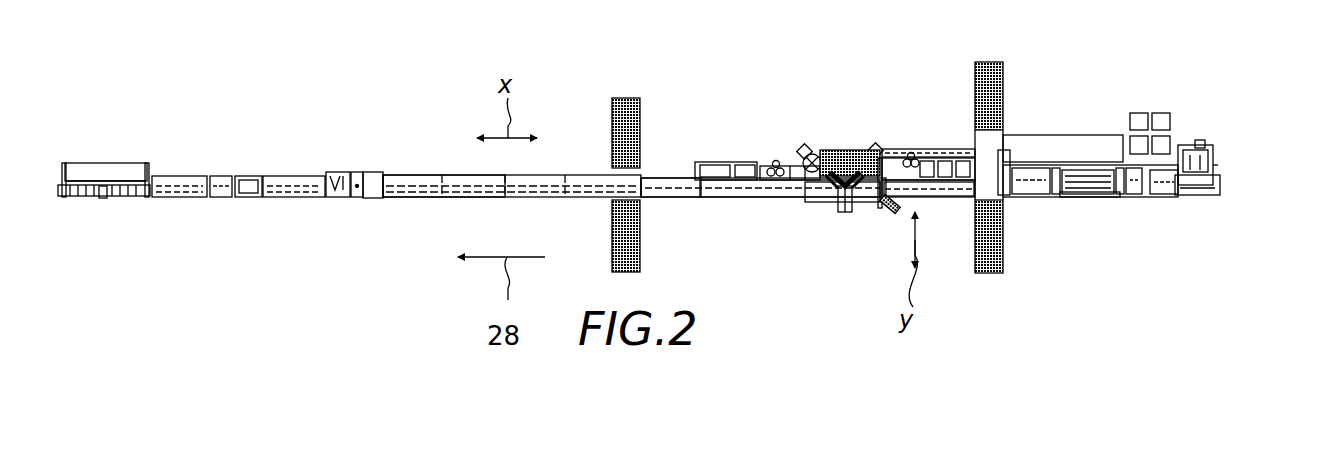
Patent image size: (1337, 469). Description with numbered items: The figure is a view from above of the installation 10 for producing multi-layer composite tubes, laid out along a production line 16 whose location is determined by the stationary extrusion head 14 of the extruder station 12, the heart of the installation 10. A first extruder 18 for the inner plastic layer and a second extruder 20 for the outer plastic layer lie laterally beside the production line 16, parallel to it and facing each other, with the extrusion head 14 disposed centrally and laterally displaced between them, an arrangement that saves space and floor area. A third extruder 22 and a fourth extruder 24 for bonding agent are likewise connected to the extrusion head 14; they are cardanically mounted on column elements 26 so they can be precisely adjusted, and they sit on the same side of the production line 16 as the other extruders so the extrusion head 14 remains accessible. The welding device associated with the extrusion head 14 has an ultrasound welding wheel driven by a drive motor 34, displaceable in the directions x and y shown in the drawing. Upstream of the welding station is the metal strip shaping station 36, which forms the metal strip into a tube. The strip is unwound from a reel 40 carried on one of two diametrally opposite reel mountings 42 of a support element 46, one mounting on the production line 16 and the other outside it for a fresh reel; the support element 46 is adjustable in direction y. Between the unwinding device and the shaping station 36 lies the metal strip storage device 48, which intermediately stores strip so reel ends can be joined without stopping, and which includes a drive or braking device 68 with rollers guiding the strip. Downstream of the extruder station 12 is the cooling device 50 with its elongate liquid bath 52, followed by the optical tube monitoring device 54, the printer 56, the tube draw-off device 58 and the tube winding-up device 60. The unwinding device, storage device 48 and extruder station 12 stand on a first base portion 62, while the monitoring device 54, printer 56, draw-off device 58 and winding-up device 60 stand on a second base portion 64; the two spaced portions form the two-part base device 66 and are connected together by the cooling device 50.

The installation 10 is at (787, 300).
The extruder station 12 is at (847, 117).
The extrusion head 14 is at (833, 190).
The production line 16 is at (372, 191).
The first extruder 18 is at (912, 149).
The second extruder 20 is at (783, 156).
The third extruder 22 is at (880, 136).
The fourth extruder 24 is at (807, 137).
The column elements 26 is at (833, 156).
The drive motor 34 is at (857, 205).
The metal strip shaping station 36 is at (923, 194).
The reel 40 is at (1173, 191).
The reel mountings 42 is at (1200, 119).
The support element 46 is at (1221, 165).
The metal strip storage device 48 is at (1085, 193).
The cooling device 50 is at (674, 182).
The liquid bath 52 is at (730, 196).
The optical tube monitoring device 54 is at (355, 174).
The printer 56 is at (337, 184).
The tube draw-off device 58 is at (283, 186).
The tube winding-up device 60 is at (118, 169).
The first base portion 62 is at (1147, 193).
The second base portion 64 is at (423, 174).
The base device 66 is at (1032, 203).
The drive or braking device 68 is at (1117, 194).